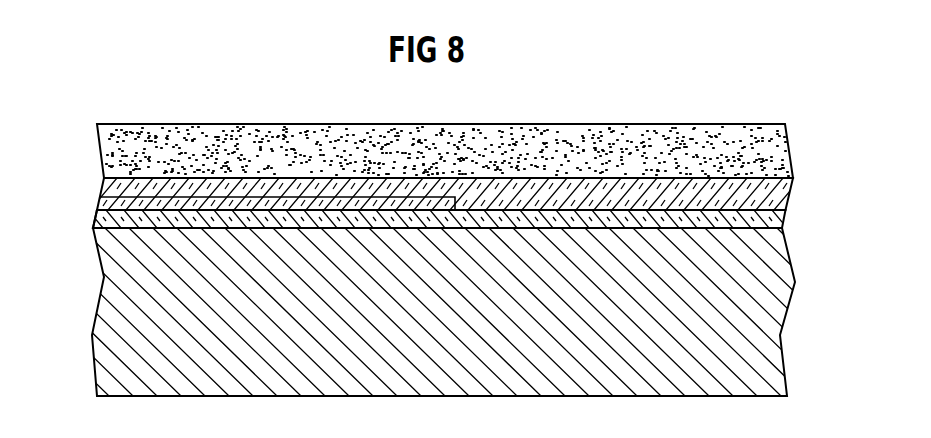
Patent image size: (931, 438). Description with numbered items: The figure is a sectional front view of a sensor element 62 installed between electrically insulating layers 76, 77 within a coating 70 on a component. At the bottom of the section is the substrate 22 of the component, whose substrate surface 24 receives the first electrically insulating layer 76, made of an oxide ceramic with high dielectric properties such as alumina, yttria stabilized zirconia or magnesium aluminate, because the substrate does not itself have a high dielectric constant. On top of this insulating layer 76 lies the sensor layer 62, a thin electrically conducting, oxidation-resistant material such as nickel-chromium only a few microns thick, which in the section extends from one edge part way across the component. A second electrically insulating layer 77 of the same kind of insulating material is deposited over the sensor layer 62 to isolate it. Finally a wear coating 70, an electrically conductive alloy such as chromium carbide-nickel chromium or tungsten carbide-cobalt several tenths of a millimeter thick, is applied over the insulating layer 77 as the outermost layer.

The substrate 22 is at (767, 317).
The substrate surface 24 is at (113, 224).
The sensor element 62 is at (101, 205).
The wear coating 70 is at (765, 150).
The electrically insulating layer 76 is at (772, 221).
The electrically insulating layer 77 is at (784, 195).